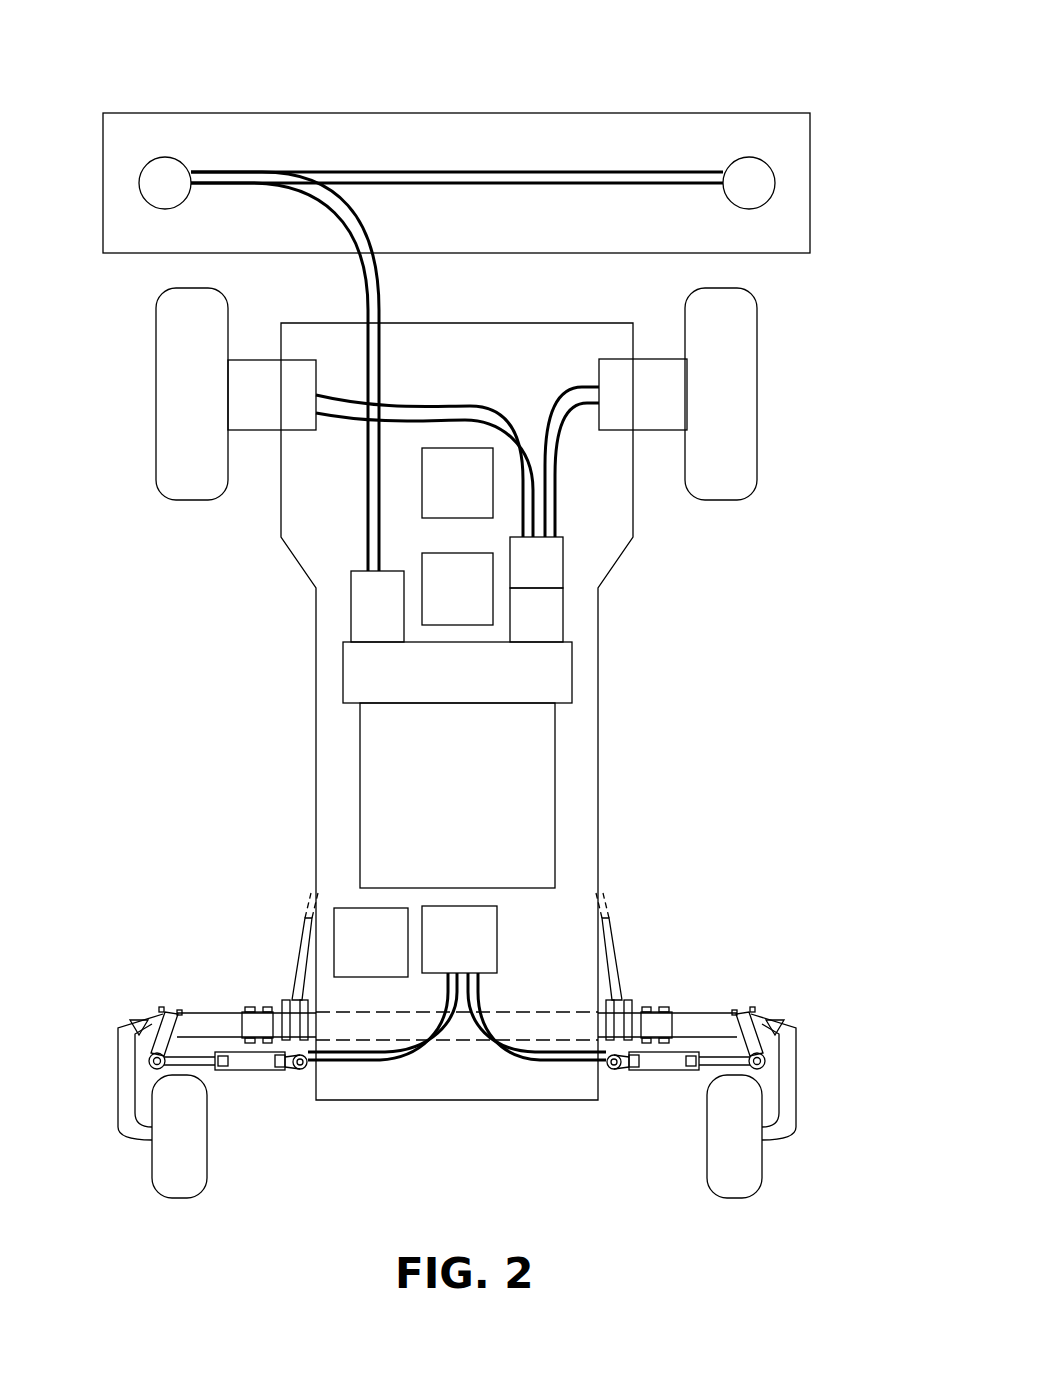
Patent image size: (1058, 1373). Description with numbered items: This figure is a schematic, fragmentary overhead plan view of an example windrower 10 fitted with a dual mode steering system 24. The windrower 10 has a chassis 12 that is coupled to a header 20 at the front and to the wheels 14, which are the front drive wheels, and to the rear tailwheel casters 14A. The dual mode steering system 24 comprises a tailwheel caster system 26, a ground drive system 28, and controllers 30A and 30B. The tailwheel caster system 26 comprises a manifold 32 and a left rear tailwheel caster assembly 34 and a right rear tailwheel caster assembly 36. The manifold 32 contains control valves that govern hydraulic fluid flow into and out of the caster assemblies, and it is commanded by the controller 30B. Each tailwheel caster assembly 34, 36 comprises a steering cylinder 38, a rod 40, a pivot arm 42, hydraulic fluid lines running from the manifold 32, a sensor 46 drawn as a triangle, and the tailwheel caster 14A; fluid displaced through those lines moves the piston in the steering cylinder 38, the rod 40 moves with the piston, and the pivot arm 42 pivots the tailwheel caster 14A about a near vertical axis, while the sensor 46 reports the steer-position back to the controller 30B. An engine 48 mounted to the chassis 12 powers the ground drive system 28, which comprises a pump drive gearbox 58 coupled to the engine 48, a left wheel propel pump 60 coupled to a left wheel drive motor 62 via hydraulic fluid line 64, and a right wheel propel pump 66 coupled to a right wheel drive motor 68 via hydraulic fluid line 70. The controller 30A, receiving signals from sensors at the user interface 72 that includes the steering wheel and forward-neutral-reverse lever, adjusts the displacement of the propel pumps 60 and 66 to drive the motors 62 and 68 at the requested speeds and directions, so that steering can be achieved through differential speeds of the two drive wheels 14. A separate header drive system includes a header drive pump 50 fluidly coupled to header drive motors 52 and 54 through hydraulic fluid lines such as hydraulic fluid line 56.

The windrower 10 is at (749, 69).
The chassis 12 is at (598, 905).
The wheels 14 is at (760, 393).
The rear tailwheel casters 14A is at (180, 1198).
The header 20 is at (810, 185).
The dual mode steering system 24 is at (750, 571).
The tailwheel caster system 26 is at (678, 844).
The ground drive system 28 is at (271, 730).
The controller 30A is at (437, 497).
The controller 30B is at (351, 956).
The manifold 32 is at (446, 952).
The tailwheel caster assembly 34 is at (340, 1141).
The tailwheel caster assembly 36 is at (592, 1145).
The steering cylinder 38 is at (245, 1063).
The rod 40 is at (196, 1058).
The pivot arm 42 is at (168, 1015).
The sensor 46 is at (145, 1023).
The engine 48 is at (515, 812).
The header drive pump 50 is at (351, 606).
The header drive motor 52 is at (163, 209).
The header drive motor 54 is at (747, 209).
The hydraulic fluid line 56 is at (380, 350).
The pump drive gearbox 58 is at (533, 699).
The left wheel propel pump 60 is at (563, 615).
The left wheel drive motor 62 is at (293, 358).
The hydraulic fluid line 64 is at (485, 408).
The right wheel propel pump 66 is at (563, 563).
The right wheel drive motor 68 is at (623, 359).
The hydraulic fluid line 70 is at (548, 408).
The user interface 72 is at (444, 604).